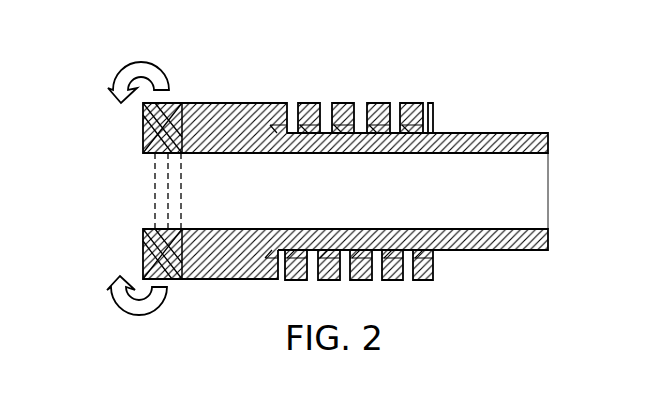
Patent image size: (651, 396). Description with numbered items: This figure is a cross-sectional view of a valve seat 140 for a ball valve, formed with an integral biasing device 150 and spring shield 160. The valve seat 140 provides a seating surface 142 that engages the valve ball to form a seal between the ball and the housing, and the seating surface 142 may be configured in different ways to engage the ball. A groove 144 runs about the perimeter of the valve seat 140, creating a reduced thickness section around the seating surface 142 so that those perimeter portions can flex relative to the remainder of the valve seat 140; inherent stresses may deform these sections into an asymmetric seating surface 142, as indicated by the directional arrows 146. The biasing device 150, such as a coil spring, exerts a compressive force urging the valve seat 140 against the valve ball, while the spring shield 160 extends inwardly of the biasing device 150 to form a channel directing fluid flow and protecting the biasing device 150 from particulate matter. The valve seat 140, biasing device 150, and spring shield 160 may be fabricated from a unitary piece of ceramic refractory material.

The valve seat 140 is at (208, 102).
The seating surface 142 is at (150, 236).
The groove 144 is at (158, 114).
The directional arrows 146 is at (137, 72).
The biasing device 150 is at (376, 103).
The spring shield 160 is at (508, 136).